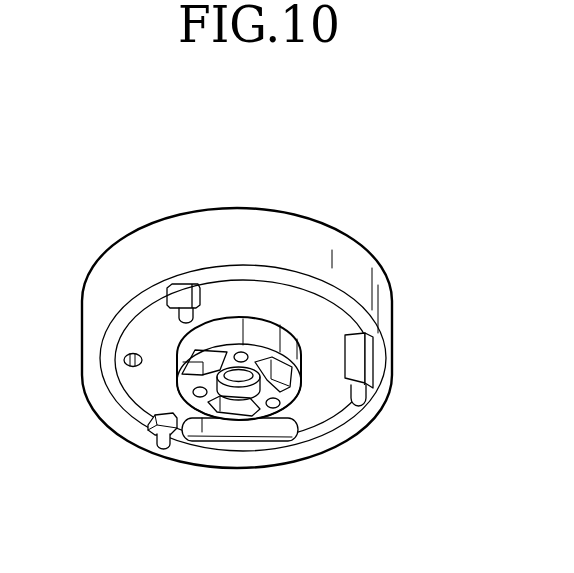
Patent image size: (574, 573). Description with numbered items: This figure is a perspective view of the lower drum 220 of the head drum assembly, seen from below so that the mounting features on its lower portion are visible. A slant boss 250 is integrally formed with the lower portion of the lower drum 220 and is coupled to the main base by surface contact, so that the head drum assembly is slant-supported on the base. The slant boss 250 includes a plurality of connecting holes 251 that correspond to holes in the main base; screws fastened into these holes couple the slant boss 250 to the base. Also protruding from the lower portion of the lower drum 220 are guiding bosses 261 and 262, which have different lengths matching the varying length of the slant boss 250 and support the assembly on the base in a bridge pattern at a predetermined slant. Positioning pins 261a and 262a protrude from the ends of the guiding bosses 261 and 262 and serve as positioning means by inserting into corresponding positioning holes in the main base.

The lower drum 220 is at (357, 262).
The slant boss 250 is at (256, 329).
The connecting hole 251 is at (274, 409).
The guiding boss 261 is at (360, 359).
The positioning pin 261a is at (360, 402).
The guiding boss 262 is at (144, 428).
The positioning pin 262a is at (157, 449).